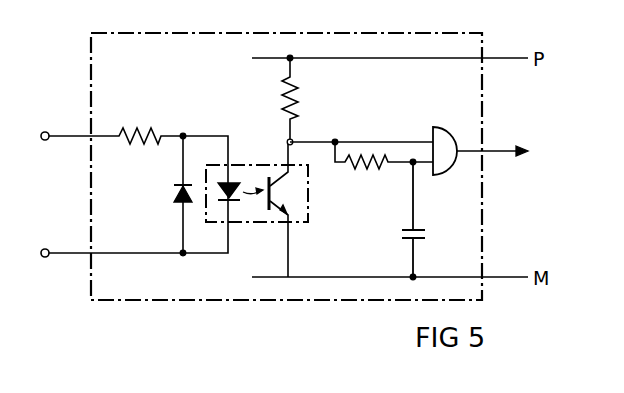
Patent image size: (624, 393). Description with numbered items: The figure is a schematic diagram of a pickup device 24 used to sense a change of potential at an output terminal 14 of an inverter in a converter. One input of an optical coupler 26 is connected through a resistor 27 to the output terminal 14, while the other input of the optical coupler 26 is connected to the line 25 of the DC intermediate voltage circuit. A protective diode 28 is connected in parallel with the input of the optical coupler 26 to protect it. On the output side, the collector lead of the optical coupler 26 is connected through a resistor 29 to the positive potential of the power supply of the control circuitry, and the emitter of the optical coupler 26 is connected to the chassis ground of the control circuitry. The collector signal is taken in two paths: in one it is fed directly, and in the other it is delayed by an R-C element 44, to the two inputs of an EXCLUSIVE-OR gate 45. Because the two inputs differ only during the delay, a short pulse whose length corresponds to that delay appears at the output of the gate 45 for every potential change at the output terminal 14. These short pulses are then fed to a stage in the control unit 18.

The output terminal 14 is at (67, 137).
The control unit 18 is at (505, 152).
The pickup device 24 is at (132, 300).
The line of the DC intermediate voltage circuit 25 is at (101, 254).
The optical coupler 26 is at (265, 165).
The resistor 27 is at (138, 131).
The protective diode 28 is at (172, 190).
The resistor 29 is at (296, 103).
The R-C element 44 is at (392, 208).
The EXCLUSIVE-OR gate 45 is at (446, 176).